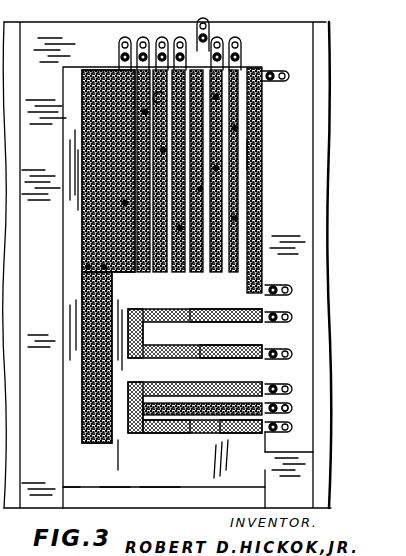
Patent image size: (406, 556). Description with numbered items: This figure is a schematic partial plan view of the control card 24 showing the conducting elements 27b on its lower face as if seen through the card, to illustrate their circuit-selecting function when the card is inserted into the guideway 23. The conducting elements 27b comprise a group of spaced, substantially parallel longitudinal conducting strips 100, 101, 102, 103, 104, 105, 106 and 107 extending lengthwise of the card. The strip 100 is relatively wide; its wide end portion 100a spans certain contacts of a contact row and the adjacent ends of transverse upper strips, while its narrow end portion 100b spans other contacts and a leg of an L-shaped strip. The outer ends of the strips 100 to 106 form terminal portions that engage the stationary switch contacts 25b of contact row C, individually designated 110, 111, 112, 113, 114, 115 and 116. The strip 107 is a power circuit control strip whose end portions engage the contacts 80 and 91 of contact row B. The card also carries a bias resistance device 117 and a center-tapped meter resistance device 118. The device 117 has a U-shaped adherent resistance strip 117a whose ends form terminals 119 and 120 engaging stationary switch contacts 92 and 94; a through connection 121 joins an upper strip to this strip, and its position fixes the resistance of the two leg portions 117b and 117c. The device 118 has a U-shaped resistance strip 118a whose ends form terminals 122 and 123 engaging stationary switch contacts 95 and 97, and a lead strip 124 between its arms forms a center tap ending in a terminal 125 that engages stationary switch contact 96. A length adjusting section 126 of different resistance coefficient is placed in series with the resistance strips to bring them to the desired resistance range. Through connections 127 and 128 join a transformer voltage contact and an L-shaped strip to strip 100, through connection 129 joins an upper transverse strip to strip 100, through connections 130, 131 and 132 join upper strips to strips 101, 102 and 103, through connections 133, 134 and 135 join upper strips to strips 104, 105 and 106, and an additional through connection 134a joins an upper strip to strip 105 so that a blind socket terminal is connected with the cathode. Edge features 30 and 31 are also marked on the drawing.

The longitudinal conducting strip 100 is at (86, 252).
The wide end portion of conducting strip 100a is at (85, 138).
The narrow end portion of conducting strip 100b is at (88, 370).
The longitudinal conducting strip 101 is at (137, 277).
The longitudinal conducting strip 102 is at (160, 277).
The longitudinal conducting strip 103 is at (179, 277).
The longitudinal conducting strip 104 is at (197, 277).
The longitudinal conducting strip 105 is at (221, 284).
The longitudinal conducting strip 106 is at (237, 280).
The power circuit control strip 107 is at (256, 153).
The stationary switch contact 110 is at (125, 70).
The stationary switch contact 111 is at (143, 37).
The stationary switch contact 112 is at (162, 37).
The stationary switch contact 113 is at (180, 37).
The stationary switch contact 114 is at (198, 37).
The stationary switch contact 115 is at (217, 37).
The stationary switch contact 116 is at (235, 37).
The resistance device 117 is at (178, 309).
The resistance strip 117a is at (128, 338).
The leg portion of resistance strip 117b is at (194, 332).
The leg portion of resistance strip 117c is at (163, 333).
The resistance device 118 is at (190, 373).
The resistance strip 118a is at (128, 415).
The terminal portion 119 is at (242, 345).
The terminal portion 120 is at (264, 350).
The through connection 121 is at (205, 303).
The terminal 122 is at (262, 389).
The terminal 123 is at (266, 436).
The lead strip 124 is at (153, 433).
The terminal 125 is at (293, 410).
The length adjusting section 126 is at (244, 306).
The through connection 127 is at (88, 267).
The through connection 128 is at (83, 283).
The through connection 129 is at (125, 203).
The through connection 130 is at (145, 112).
The through connection 131 is at (163, 150).
The through connection 132 is at (180, 228).
The through connection 133 is at (200, 189).
The through connection 134 is at (216, 168).
The additional through connection 134a is at (216, 97).
The through connection 135 is at (235, 128).
The stationary switch contacts 25b is at (250, 68).
The conducting elements 27b is at (234, 218).
The contact 80 is at (266, 82).
The contact 91 is at (265, 288).
The stationary switch contact 92 is at (264, 314).
The stationary switch contact 94 is at (247, 358).
The stationary switch contact 95 is at (266, 389).
The stationary switch contact 96 is at (266, 408).
The stationary switch contact 97 is at (292, 428).
The frame edge 30 is at (68, 490).
The guideway 23 is at (112, 493).
The control card 24 is at (162, 485).
The frame edge 31 is at (265, 490).